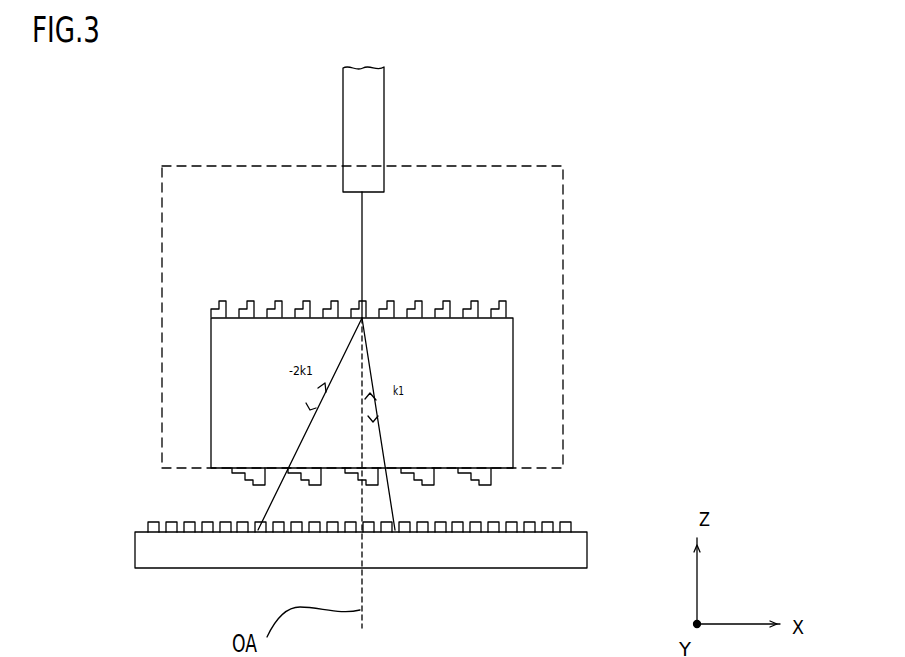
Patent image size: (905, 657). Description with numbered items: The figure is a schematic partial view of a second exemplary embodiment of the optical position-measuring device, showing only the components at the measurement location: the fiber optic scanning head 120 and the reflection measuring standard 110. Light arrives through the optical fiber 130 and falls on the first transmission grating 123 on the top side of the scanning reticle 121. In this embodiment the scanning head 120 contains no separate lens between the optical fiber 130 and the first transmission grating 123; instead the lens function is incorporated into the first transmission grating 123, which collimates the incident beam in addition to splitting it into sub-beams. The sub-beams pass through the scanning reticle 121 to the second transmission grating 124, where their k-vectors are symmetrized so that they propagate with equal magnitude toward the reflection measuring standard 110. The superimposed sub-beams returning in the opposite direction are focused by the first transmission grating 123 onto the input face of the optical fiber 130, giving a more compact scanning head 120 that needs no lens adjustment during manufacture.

The reflection measuring standard 110 is at (542, 528).
The fiber optic scanning head 120 is at (565, 185).
The scanning reticle 121 is at (493, 366).
The first transmission grating 123 is at (502, 312).
The second transmission grating 124 is at (480, 477).
The optical fiber 130 is at (373, 132).